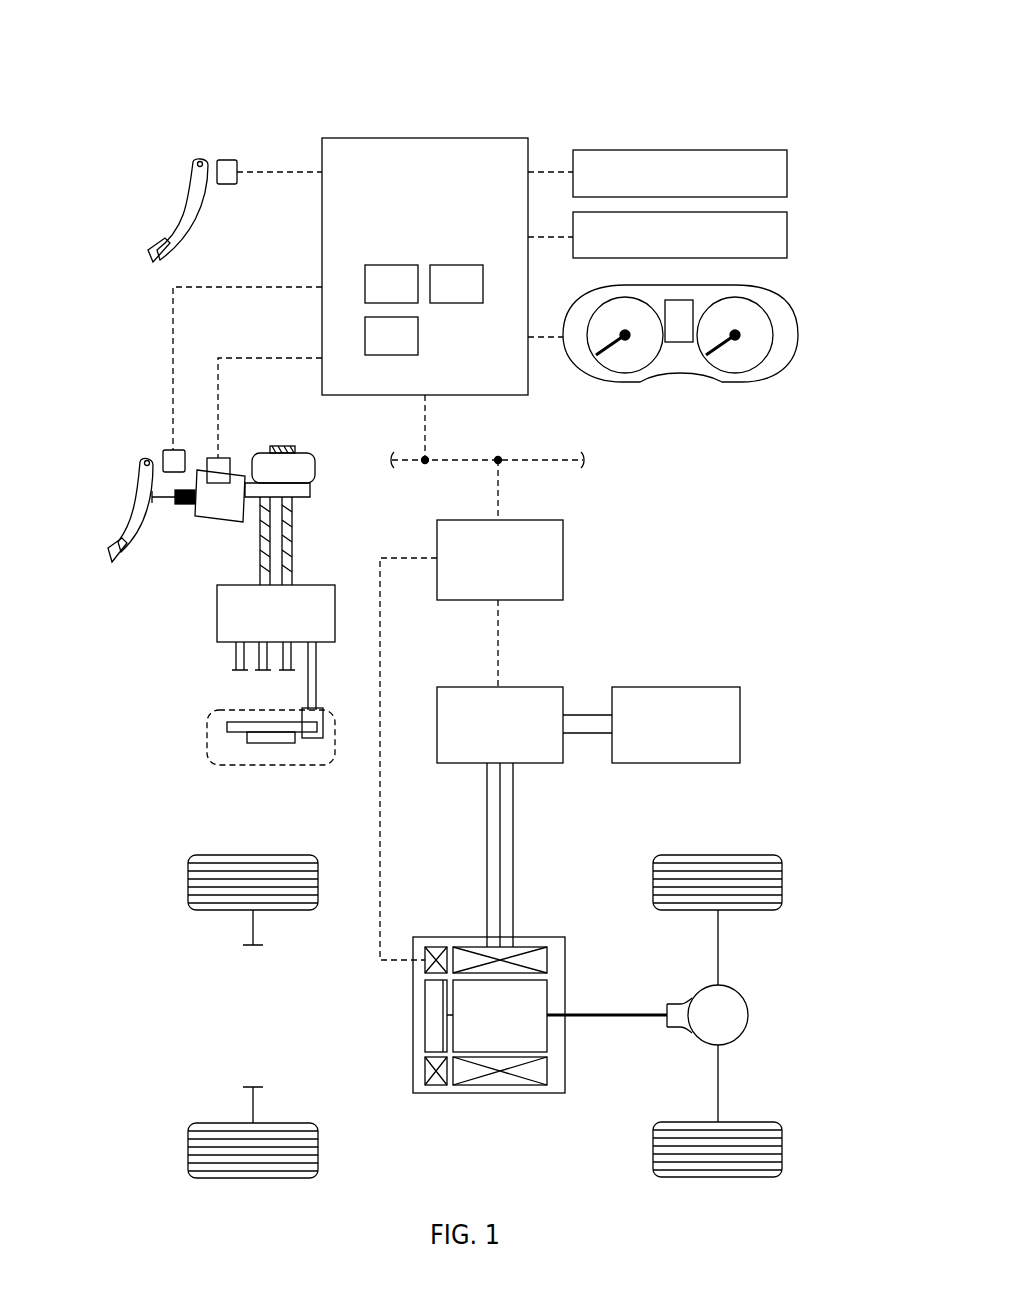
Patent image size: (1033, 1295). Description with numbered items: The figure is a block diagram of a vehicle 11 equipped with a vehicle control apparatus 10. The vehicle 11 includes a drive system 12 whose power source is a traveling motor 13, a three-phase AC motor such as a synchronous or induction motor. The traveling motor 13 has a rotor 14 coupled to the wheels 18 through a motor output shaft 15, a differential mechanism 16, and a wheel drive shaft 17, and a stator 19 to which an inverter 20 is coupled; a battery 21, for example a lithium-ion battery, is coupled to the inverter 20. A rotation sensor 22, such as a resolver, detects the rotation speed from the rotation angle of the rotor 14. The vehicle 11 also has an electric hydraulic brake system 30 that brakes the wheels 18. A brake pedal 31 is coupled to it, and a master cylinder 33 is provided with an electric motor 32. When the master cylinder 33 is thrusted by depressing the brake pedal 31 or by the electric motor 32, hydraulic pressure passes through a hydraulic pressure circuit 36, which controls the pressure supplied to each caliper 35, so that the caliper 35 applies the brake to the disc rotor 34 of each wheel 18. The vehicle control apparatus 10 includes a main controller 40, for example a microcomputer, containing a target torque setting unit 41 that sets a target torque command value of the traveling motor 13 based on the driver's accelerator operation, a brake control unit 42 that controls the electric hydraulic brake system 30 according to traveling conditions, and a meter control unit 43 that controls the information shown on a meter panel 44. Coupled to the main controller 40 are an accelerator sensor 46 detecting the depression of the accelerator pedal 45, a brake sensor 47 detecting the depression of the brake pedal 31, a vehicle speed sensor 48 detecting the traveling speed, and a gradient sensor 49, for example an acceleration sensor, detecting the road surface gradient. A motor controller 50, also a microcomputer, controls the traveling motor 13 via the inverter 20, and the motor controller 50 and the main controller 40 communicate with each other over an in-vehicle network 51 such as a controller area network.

The vehicle control apparatus 10 is at (634, 90).
The vehicle 11 is at (728, 70).
The drive system 12 is at (603, 950).
The traveling motor 13 is at (517, 1056).
The rotor 14 is at (547, 1028).
The motor output shaft 15 is at (628, 1008).
The differential mechanism 16 is at (748, 1018).
The wheel drive shaft 17 is at (720, 940).
The wheel 18 is at (782, 878).
The stator 19 is at (547, 1075).
The inverter 20 is at (537, 687).
The battery 21 is at (715, 687).
The rotation sensor 22 is at (437, 1085).
The electric hydraulic brake system 30 is at (140, 412).
The brake pedal 31 is at (115, 545).
The electric motor 32 is at (220, 458).
The master cylinder 33 is at (295, 497).
The disc rotor 34 is at (225, 727).
The caliper 35 is at (305, 718).
The hydraulic pressure circuit 36 is at (217, 620).
The main controller 40 is at (425, 244).
The target torque setting unit 41 is at (391, 284).
The brake control unit 42 is at (456, 284).
The meter control unit 43 is at (391, 336).
The meter panel 44 is at (798, 340).
The accelerator pedal 45 is at (155, 250).
The accelerator sensor 46 is at (226, 160).
The brake sensor 47 is at (163, 452).
The vehicle speed sensor 48 is at (787, 165).
The gradient sensor 49 is at (787, 228).
The motor controller 50 is at (565, 538).
The in-vehicle network 51 is at (560, 438).